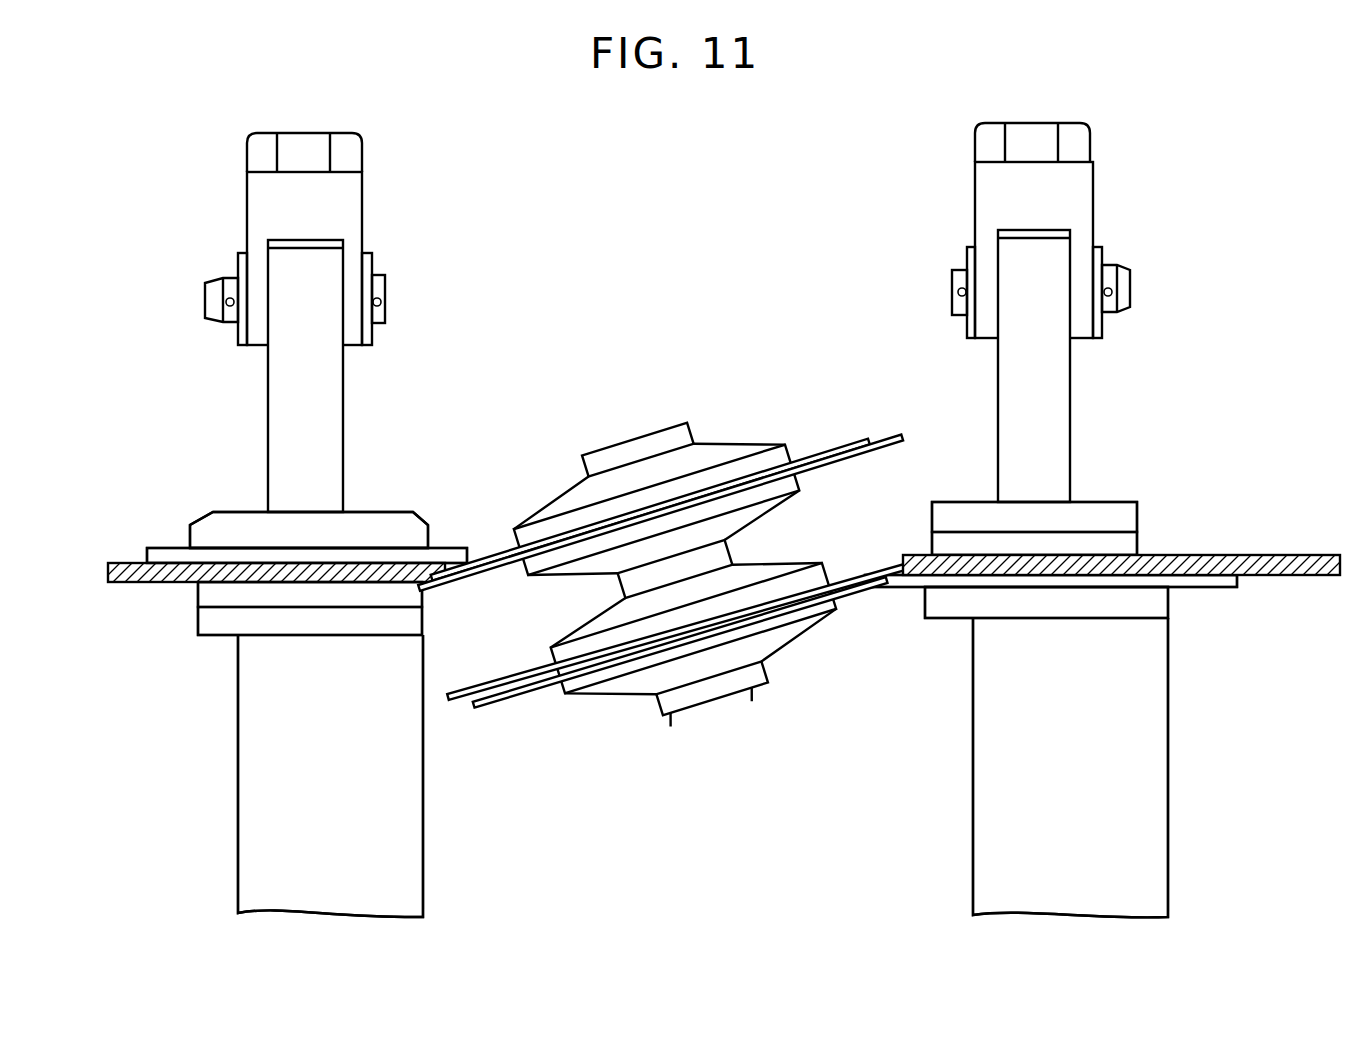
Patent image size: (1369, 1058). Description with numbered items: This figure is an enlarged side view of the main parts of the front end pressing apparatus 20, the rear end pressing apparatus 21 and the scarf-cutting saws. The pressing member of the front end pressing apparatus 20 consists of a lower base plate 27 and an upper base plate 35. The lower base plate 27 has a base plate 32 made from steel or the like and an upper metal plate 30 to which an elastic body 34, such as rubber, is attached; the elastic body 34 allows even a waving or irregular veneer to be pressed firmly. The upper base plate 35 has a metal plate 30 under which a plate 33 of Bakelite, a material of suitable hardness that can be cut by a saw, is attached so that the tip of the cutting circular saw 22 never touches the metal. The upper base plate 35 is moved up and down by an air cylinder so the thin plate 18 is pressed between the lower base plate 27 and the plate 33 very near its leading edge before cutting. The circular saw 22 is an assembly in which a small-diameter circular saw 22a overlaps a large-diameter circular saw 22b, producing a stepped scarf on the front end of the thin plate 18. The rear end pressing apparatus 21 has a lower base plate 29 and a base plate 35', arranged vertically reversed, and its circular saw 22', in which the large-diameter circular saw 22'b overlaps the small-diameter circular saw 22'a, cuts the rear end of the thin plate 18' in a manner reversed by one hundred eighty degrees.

The thin plate 18 is at (246, 528).
The thin plate 18' is at (1121, 516).
The front end pressing apparatus 20 is at (408, 228).
The rear end pressing apparatus 21 is at (1122, 208).
The cutting circular saw 22 is at (695, 461).
The circular saw having a small diameter 22a is at (852, 442).
The circular saw having a large diameter 22b is at (832, 375).
The circular saw 22' is at (665, 694).
The circular saw having a small diameter 22'a is at (680, 678).
The circular saw having a large diameter 22'b is at (665, 671).
The lower base plate 27 is at (96, 595).
The lower base plate 29 is at (1319, 592).
The metal plate 30 is at (210, 512).
The base plate 32 is at (253, 728).
The plate (Bakelite plate) 33 is at (147, 553).
The elastic body 34 is at (200, 593).
The upper base plate 35 is at (273, 454).
The base plate 35' is at (1104, 459).